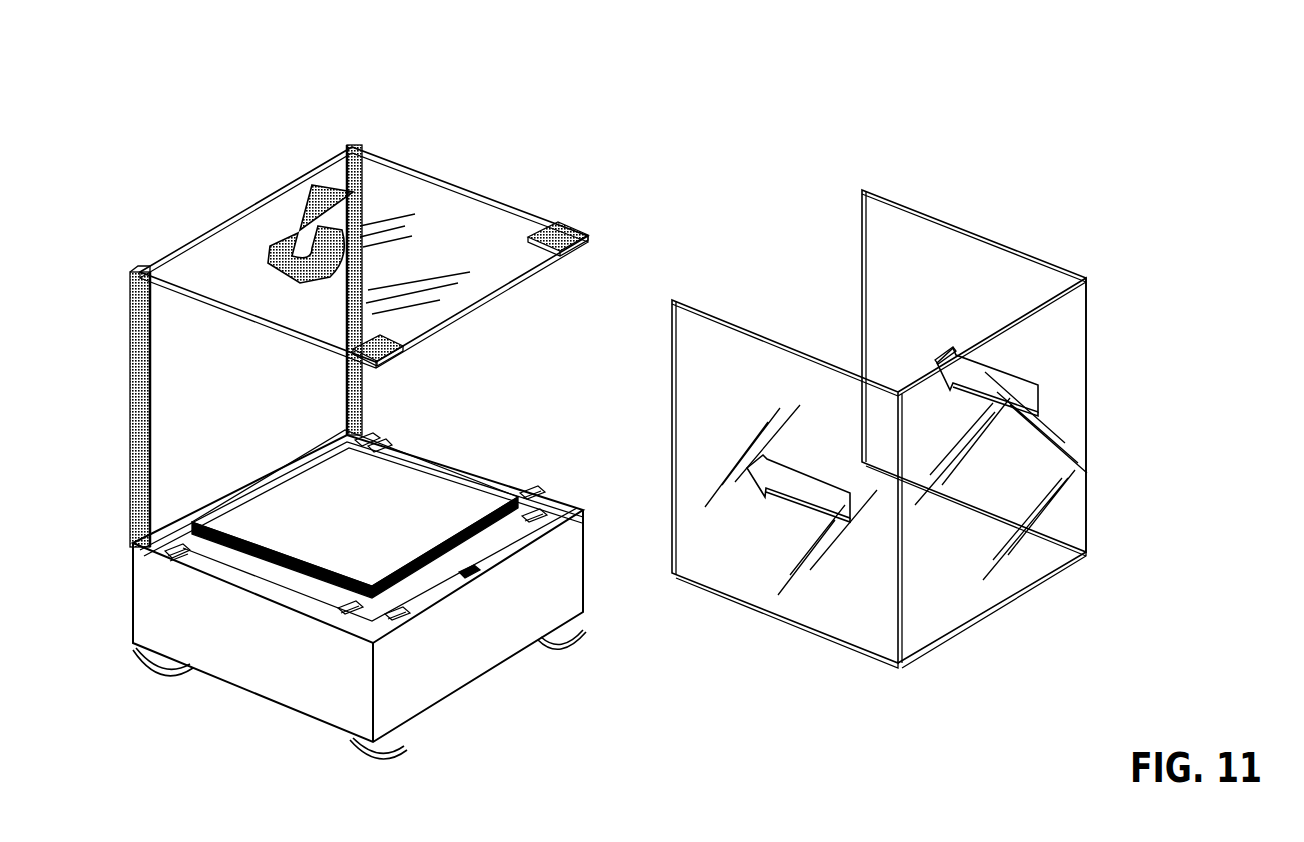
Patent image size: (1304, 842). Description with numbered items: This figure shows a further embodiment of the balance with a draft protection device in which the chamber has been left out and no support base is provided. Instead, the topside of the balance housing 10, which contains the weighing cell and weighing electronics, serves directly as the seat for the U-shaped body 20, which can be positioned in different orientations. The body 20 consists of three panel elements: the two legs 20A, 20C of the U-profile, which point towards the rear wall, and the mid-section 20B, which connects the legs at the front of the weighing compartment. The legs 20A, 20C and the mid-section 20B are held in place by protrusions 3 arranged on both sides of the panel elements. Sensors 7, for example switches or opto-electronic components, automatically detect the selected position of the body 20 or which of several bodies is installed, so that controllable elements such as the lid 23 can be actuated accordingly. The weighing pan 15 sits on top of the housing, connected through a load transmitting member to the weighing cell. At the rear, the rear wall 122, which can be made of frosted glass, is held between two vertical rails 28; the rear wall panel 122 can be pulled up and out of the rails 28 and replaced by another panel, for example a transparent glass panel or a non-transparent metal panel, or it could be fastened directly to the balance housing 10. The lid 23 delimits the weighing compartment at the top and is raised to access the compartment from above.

The protrusions 3 is at (541, 500).
The sensors 7 is at (467, 567).
The balance housing 10 is at (237, 665).
The weighing pan 15 is at (405, 495).
The U-shaped body 20 is at (907, 427).
The leg of the U-profile 20A is at (940, 265).
The mid-section of the U-profile 20B is at (985, 580).
The leg of the U-profile 20C is at (757, 572).
The lid 23 is at (470, 210).
The vertical rails 28 is at (347, 148).
The rear wall 122 is at (203, 413).